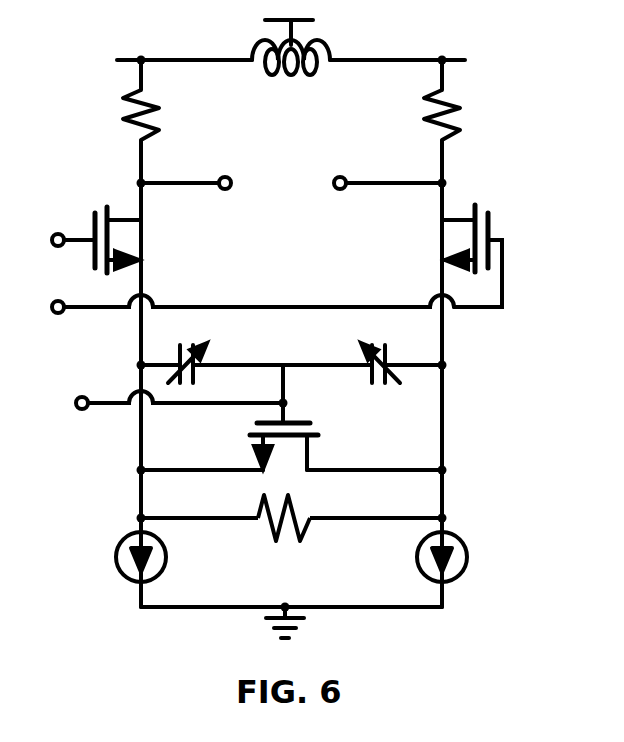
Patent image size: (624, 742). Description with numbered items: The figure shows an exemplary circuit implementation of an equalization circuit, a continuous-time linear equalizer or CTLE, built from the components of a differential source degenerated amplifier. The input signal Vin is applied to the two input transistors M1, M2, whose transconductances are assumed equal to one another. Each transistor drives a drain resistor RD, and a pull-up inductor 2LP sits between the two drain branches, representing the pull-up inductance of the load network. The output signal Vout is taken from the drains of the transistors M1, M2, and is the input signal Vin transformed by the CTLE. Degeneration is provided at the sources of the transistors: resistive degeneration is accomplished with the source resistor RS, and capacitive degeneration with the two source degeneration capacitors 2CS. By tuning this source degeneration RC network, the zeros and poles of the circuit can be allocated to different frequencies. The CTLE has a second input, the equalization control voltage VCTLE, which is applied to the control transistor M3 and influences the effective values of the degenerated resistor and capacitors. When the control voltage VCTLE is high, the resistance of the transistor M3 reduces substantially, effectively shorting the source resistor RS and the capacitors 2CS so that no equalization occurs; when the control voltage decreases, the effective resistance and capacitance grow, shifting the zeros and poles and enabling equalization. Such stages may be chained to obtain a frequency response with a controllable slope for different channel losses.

The pull-up inductor 2LP is at (263, 42).
The drain resistor RD is at (290, 120).
The output signal Vout is at (291, 166).
The transistor M1 is at (132, 240).
The transistor M2 is at (438, 256).
The input signal Vin is at (242, 280).
The source degeneration capacitor 2CS is at (291, 360).
The equalization control voltage VCTLE is at (150, 428).
The transistor M3 is at (291, 417).
The source resistor RS is at (291, 538).